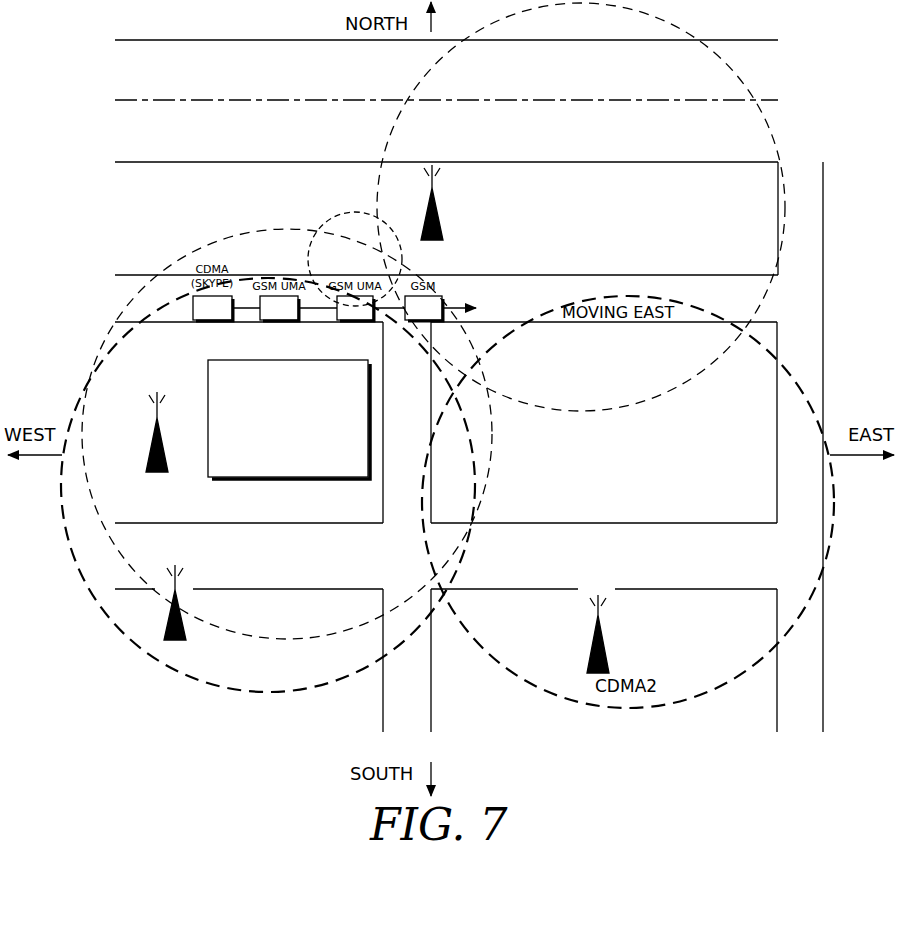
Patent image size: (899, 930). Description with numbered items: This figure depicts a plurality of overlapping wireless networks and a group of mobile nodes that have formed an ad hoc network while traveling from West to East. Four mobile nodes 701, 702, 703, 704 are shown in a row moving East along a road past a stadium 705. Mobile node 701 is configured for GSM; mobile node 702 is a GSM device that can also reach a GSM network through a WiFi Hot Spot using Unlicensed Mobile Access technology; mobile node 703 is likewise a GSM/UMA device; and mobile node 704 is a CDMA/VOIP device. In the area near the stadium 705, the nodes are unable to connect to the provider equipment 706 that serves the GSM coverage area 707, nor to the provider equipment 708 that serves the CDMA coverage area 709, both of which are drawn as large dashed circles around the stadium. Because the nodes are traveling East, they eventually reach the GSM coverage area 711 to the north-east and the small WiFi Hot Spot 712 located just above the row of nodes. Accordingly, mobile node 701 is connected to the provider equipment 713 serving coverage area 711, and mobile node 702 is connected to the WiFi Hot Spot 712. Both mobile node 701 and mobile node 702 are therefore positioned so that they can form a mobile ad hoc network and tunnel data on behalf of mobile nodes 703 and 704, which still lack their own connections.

The mobile node 701 is at (445, 300).
The mobile node 702 is at (352, 322).
The mobile node 703 is at (274, 322).
The mobile node 704 is at (210, 322).
The stadium 705 is at (287, 480).
The provider equipment 706 is at (146, 456).
The GSM coverage area 707 is at (244, 634).
The provider equipment 708 is at (166, 637).
The CDMA coverage area 709 is at (62, 508).
The GSM coverage area 711 is at (773, 135).
The WiFi Hot Spot 712 is at (350, 214).
The provider equipment 713 is at (444, 225).